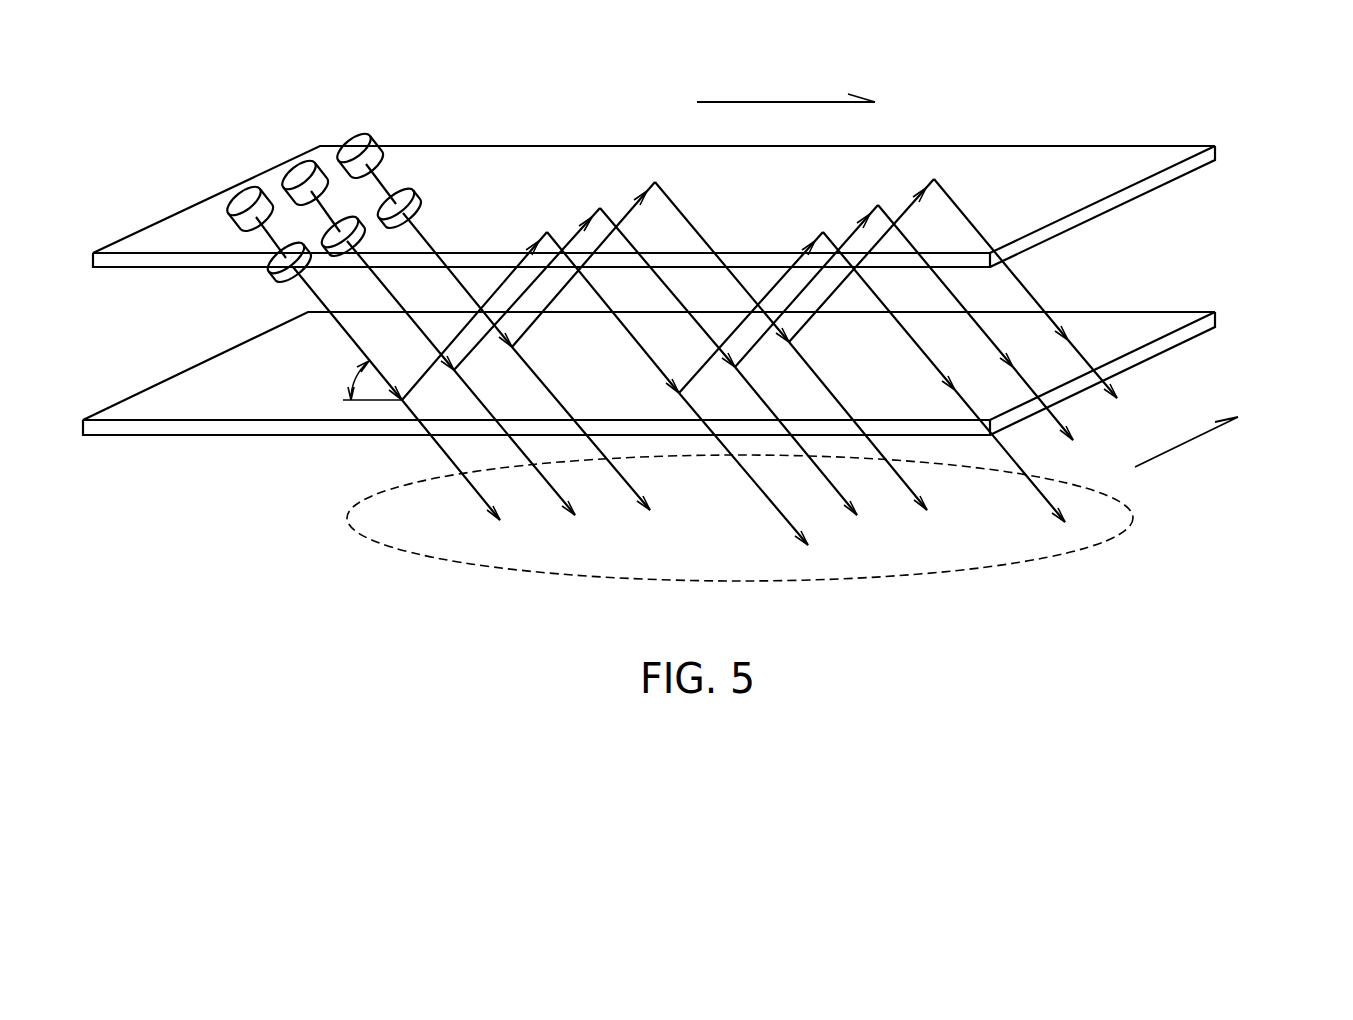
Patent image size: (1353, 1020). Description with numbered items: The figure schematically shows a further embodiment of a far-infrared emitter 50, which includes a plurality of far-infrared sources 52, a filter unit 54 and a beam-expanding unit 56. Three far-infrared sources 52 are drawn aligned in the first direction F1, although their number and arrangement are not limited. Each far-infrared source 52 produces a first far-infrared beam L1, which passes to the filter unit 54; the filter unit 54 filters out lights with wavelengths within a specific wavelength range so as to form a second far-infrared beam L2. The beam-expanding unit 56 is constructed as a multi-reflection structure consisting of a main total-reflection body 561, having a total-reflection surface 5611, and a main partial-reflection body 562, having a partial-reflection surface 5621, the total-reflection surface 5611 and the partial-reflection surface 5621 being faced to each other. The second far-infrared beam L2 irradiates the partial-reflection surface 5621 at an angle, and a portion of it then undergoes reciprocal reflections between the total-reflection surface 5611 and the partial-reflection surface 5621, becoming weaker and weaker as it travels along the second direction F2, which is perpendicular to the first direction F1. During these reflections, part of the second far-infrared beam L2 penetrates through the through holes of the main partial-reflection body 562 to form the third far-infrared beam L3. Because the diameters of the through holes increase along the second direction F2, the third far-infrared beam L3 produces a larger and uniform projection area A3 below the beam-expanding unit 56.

The far-infrared emitter 50 is at (151, 82).
The far-infrared source 52 is at (343, 145).
The filter unit 54 is at (420, 211).
The beam-expanding unit 56 is at (1267, 92).
The main total-reflection body 561 is at (679, 182).
The total-reflection surface 5611 is at (1143, 193).
The main partial-reflection body 562 is at (672, 350).
The partial-reflection surface 5621 is at (1133, 325).
The first far-infrared beam L1 is at (392, 204).
The second far-infrared beam L2 is at (465, 292).
The third far-infrared beam L3 is at (443, 452).
The projection area A3 is at (378, 532).
The first direction F1 is at (1186, 433).
The second direction F2 is at (786, 82).